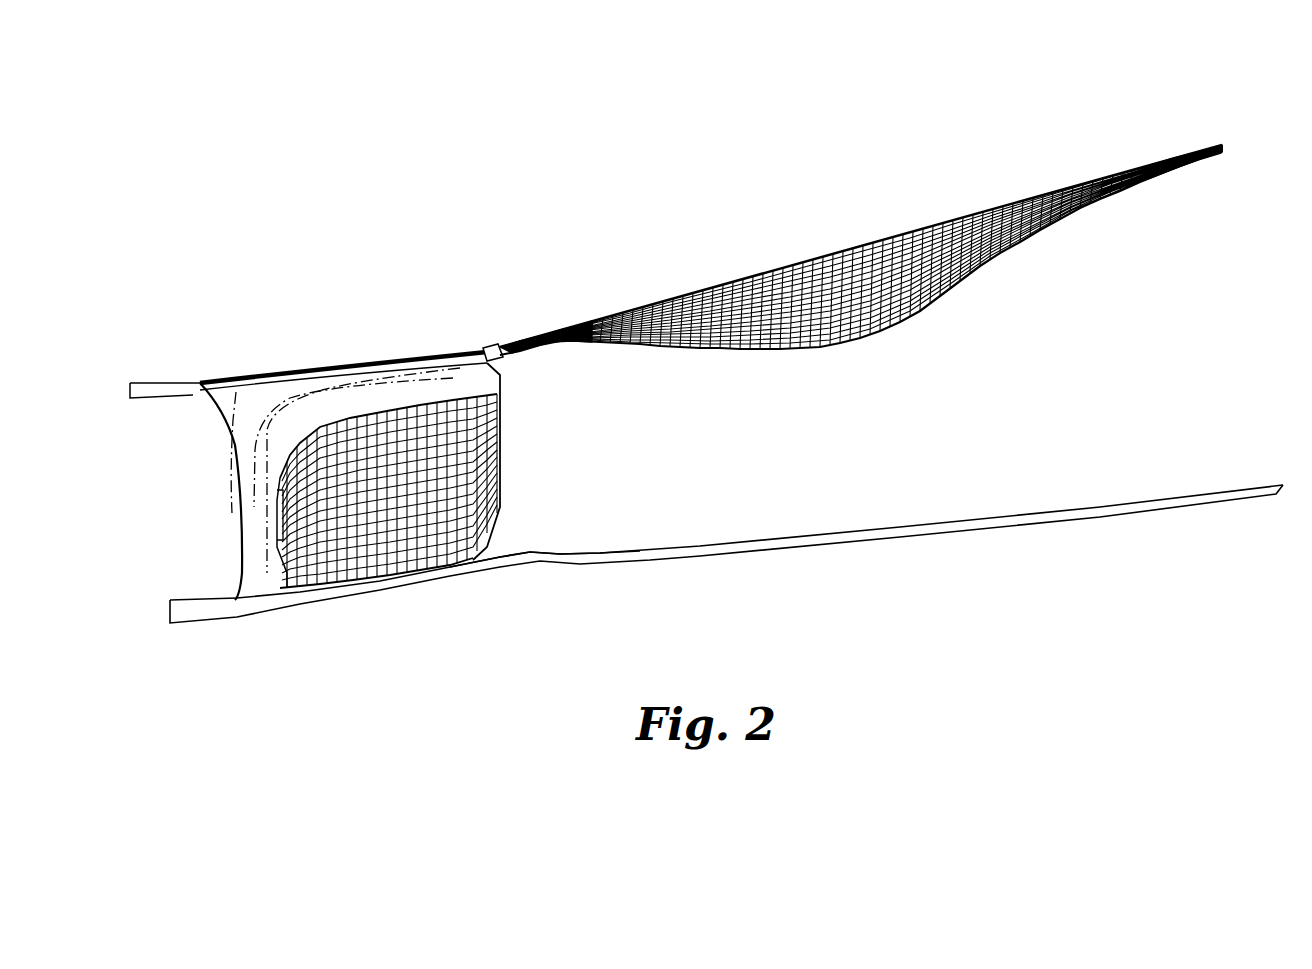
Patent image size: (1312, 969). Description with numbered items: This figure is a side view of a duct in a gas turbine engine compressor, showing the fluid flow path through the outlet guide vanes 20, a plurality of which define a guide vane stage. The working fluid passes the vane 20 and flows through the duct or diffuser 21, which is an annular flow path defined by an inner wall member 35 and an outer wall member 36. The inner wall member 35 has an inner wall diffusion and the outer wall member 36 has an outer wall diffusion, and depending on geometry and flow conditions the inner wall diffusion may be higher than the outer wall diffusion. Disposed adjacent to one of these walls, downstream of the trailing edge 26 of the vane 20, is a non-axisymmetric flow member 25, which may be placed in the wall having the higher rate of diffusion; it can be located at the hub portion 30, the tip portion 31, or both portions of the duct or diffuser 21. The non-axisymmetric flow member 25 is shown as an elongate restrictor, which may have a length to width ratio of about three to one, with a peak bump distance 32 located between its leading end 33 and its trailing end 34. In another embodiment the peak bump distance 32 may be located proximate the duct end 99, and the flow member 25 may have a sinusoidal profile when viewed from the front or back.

The outlet guide vane 20 is at (380, 512).
The duct or diffuser 21 is at (1005, 520).
The non-axisymmetric flow member 25 is at (937, 255).
The trailing edge 26 is at (503, 437).
The hub portion 30 is at (835, 540).
The tip portion 31 is at (795, 262).
The peak bump distance 32 is at (873, 338).
The leading end 33 is at (643, 310).
The trailing end 34 is at (1208, 138).
The inner wall member 35 is at (637, 557).
The outer wall member 36 is at (580, 327).
The duct end 99 is at (1226, 147).